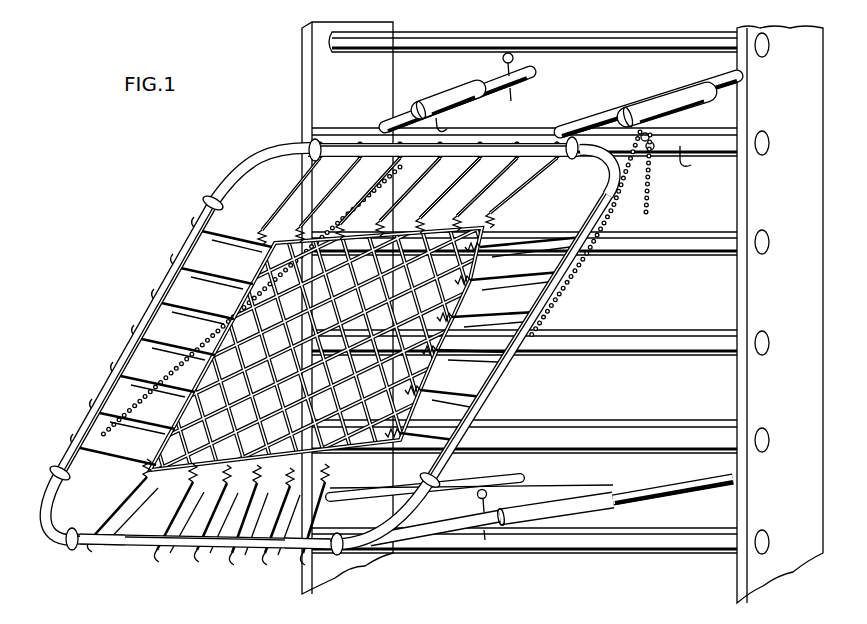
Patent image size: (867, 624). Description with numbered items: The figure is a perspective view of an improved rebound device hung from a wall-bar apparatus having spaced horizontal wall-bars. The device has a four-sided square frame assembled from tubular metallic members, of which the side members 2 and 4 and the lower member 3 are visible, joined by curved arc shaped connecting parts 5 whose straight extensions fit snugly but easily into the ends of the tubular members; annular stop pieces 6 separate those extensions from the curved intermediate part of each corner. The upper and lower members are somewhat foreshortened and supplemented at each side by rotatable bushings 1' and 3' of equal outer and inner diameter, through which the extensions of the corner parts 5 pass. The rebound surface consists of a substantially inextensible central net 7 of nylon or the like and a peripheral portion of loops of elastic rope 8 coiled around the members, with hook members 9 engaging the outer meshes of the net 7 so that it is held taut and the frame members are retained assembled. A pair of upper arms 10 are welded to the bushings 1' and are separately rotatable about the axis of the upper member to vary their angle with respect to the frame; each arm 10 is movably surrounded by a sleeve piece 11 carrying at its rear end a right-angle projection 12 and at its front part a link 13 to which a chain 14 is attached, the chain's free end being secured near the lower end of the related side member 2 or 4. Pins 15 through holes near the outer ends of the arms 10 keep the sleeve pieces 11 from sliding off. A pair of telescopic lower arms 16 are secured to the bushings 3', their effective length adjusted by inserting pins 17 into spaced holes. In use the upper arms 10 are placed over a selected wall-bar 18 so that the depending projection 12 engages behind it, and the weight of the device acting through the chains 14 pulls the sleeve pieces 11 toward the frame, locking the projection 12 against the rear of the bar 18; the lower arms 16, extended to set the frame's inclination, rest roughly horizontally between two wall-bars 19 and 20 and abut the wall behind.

The bushing 1' is at (333, 350).
The tubular metallic member 2 is at (514, 366).
The tubular metallic member 3 is at (204, 557).
The bushing 3' is at (205, 560).
The tubular metallic member 4 is at (185, 246).
The curved arc shaped connecting part 5 is at (245, 158).
The annular stop piece 6 is at (208, 201).
The net 7 is at (252, 298).
The elastic rope 8 is at (110, 372).
The hook member 9 is at (290, 238).
The upper arm 10 is at (390, 127).
The sleeve piece 11 is at (448, 96).
The projection 12 is at (472, 118).
The link 13 is at (654, 150).
The chain 14 is at (586, 257).
The pin 15 is at (500, 63).
The lower arm 16 is at (553, 498).
The pin 17 is at (482, 501).
The wall-bar 18 is at (711, 142).
The wall-bar 19 is at (651, 421).
The wall-bar 20 is at (650, 540).